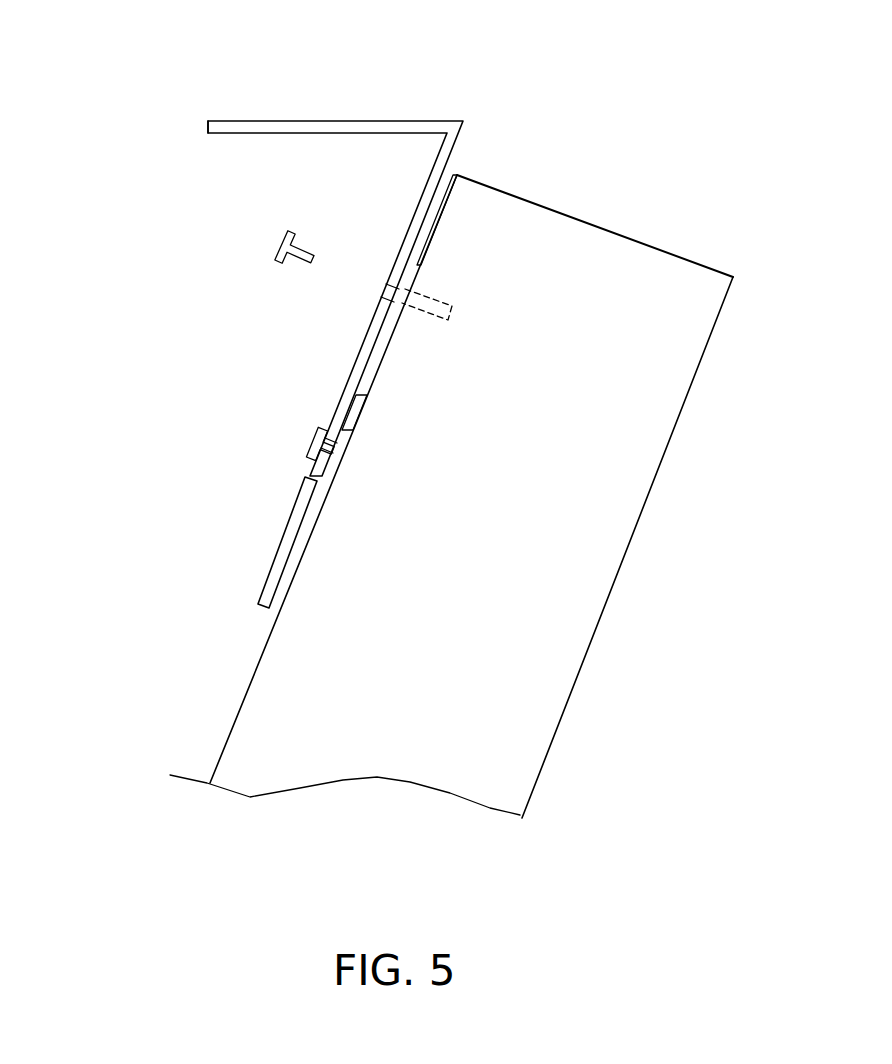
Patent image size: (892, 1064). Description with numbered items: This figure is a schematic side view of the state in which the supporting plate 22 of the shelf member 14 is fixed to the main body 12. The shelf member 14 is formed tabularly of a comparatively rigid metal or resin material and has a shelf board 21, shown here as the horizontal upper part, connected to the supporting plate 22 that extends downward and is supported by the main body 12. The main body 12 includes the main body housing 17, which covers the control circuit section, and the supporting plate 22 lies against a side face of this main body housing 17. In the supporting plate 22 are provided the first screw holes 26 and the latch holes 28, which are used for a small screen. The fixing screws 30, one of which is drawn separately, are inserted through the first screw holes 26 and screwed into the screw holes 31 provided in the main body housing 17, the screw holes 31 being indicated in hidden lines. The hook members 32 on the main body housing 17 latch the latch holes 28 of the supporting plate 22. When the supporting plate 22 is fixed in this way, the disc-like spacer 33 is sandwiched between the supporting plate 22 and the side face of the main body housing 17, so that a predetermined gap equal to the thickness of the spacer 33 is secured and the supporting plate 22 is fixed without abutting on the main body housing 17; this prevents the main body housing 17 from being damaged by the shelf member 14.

The main body 12 is at (503, 496).
The shelf member 14 is at (405, 248).
The main body housing 17 is at (609, 226).
The shelf board 21 is at (222, 83).
The supporting plate 22 is at (215, 542).
The first screw holes 26 is at (227, 306).
The latch holes 28 is at (191, 458).
The fixing screws 30 is at (169, 252).
The screw holes 31 is at (578, 213).
The hook members 32 is at (192, 429).
The spacer 33 is at (441, 471).